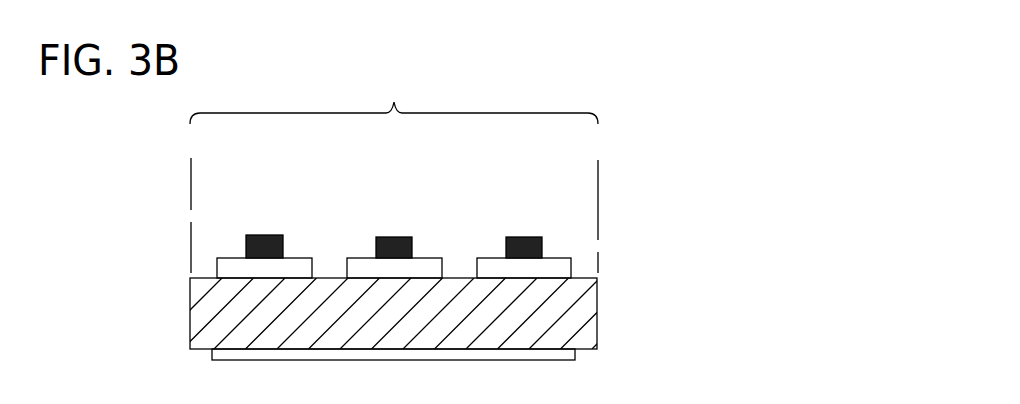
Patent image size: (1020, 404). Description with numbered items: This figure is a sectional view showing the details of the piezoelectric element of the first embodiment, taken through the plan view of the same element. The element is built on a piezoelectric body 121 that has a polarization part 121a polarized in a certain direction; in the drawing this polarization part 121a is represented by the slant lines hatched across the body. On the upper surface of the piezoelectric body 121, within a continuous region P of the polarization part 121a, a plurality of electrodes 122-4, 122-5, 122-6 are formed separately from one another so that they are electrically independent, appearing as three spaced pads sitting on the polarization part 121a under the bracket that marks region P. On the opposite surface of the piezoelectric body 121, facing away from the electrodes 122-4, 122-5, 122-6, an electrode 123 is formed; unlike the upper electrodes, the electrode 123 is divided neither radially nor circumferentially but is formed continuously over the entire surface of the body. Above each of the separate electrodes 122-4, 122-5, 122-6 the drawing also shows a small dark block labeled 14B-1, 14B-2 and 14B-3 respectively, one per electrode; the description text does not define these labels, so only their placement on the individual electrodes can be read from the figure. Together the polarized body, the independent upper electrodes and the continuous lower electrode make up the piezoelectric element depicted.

The continuous region P is at (394, 175).
The piezoelectric body 121 is at (423, 313).
The polarization part 121a is at (577, 313).
The electrode 123 is at (576, 357).
The electrode 122-4 is at (294, 268).
The electrode 122-5 is at (435, 271).
The electrode 122-6 is at (556, 271).
The light emitting element 14B-1 is at (260, 235).
The light emitting element 14B-2 is at (400, 237).
The light emitting element 14B-3 is at (520, 237).